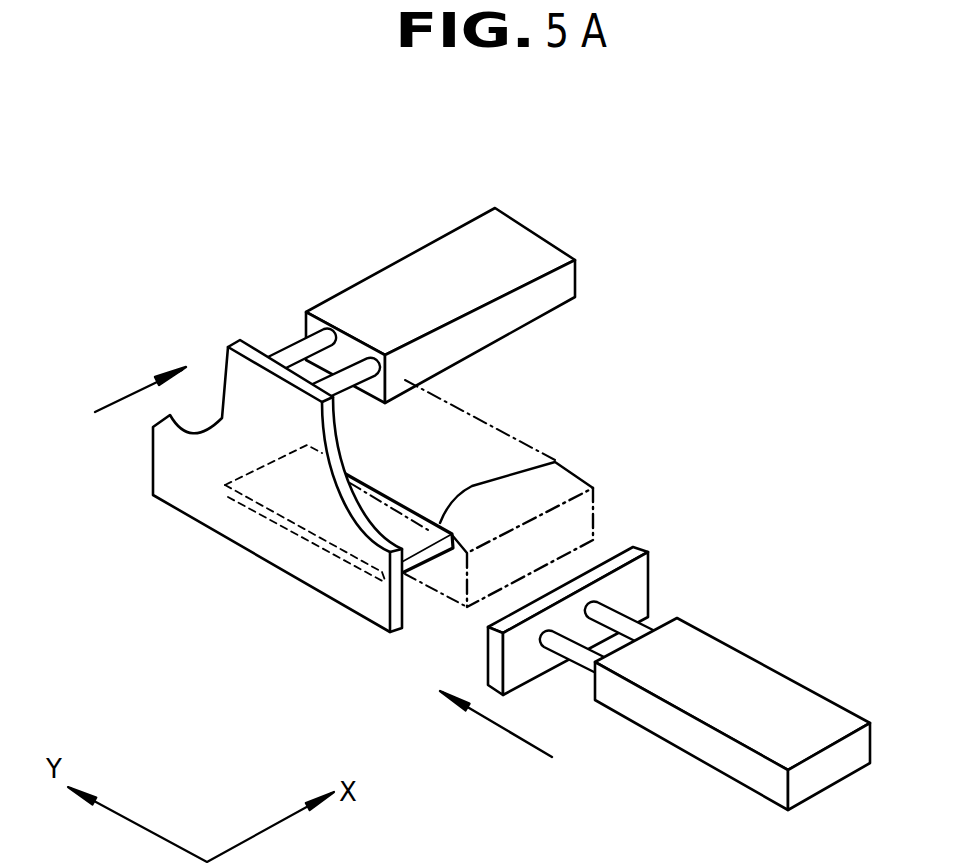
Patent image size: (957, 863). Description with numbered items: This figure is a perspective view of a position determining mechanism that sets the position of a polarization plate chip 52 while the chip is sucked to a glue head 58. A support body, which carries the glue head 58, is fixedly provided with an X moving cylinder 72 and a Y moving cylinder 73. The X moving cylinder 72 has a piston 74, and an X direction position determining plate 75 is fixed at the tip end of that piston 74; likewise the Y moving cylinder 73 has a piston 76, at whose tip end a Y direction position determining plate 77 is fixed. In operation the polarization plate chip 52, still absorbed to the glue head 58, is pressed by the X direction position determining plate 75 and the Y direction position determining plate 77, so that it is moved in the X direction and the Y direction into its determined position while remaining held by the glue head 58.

The polarization plate chip 52 is at (553, 460).
The glue head 58 is at (513, 412).
The X moving cylinder 72 is at (418, 268).
The Y moving cylinder 73 is at (725, 665).
The piston 74 is at (300, 353).
The X direction position determining plate 75 is at (228, 523).
The piston 76 is at (637, 611).
The Y direction position determining plate 77 is at (637, 548).